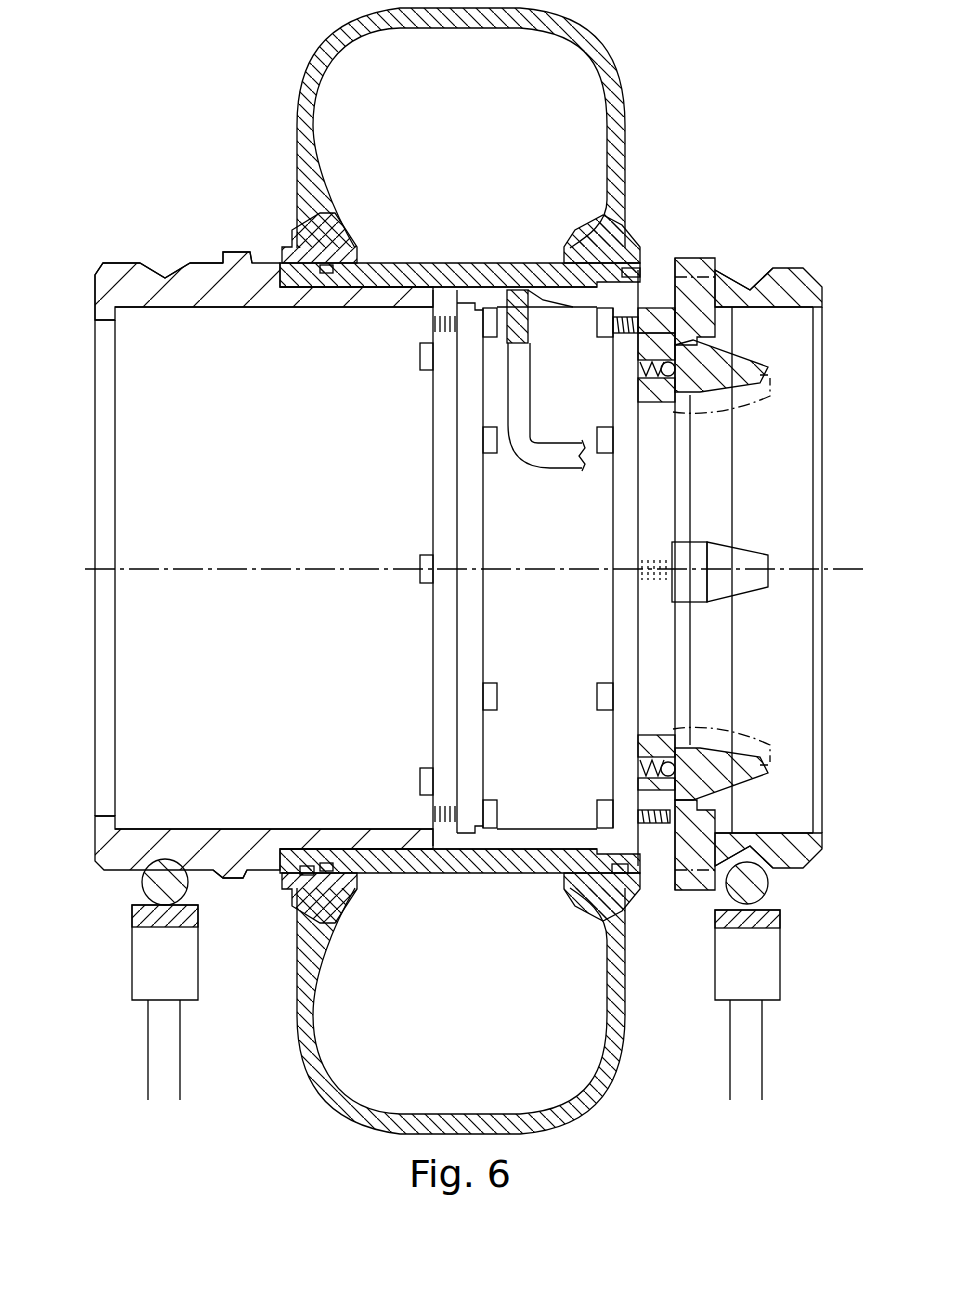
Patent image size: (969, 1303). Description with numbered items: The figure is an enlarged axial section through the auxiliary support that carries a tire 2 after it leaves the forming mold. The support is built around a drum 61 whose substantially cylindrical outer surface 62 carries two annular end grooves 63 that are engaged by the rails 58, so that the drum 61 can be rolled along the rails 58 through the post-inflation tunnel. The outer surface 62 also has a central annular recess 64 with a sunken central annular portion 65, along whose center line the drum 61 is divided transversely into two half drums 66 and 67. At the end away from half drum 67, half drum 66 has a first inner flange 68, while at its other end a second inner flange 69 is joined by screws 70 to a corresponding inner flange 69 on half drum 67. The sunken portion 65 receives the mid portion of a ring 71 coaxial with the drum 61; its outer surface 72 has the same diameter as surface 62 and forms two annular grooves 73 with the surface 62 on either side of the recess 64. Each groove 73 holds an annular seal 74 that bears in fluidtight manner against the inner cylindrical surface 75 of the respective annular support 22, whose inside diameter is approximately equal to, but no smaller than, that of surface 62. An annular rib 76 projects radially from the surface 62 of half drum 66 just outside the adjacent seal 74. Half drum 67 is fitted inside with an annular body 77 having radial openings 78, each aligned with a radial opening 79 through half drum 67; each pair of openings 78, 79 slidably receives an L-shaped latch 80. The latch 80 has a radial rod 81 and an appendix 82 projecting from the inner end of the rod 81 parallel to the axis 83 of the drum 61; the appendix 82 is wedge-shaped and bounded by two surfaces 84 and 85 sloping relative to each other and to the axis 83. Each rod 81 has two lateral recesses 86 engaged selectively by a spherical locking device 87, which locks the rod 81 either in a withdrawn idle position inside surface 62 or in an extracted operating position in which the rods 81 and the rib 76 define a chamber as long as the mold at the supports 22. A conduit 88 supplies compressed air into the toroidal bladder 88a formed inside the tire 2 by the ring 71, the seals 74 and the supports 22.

The tire 2 is at (630, 70).
The toroidal bladder 88a is at (585, 148).
The annular support 22 is at (250, 251).
The rail 58 is at (158, 885).
The drum 61 is at (90, 475).
The outer surface 62 is at (117, 262).
The annular end groove 63 is at (166, 278).
The central annular recess 64 is at (432, 285).
The sunken central annular portion 65 is at (394, 283).
The half drum 66 is at (130, 380).
The half drum 67 is at (793, 457).
The first inner flange 68 is at (100, 598).
The second inner flange 69 is at (462, 511).
The screw 70 is at (420, 353).
The ring 71 is at (468, 272).
The outer surface 72 is at (368, 262).
The annular groove 73 is at (296, 893).
The annular seal 74 is at (304, 872).
The inner cylindrical surface 75 is at (343, 280).
The annular rib 76 is at (233, 248).
The annular body 77 is at (720, 508).
The radial opening 78 is at (712, 305).
The radial opening 79 is at (705, 267).
The latch 80 is at (704, 257).
The rod 81 is at (773, 297).
The appendix 82 is at (770, 368).
The axis 83 is at (192, 566).
The sloping surface 84 is at (754, 357).
The sloping surface 85 is at (748, 387).
The lateral recess 86 is at (645, 370).
The spherical locking device 87 is at (657, 380).
The conduit 88 is at (540, 458).